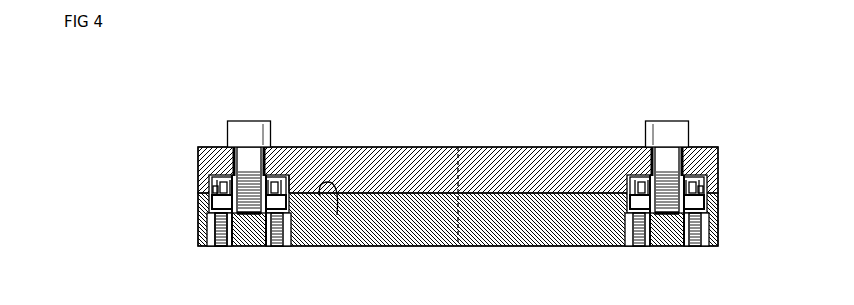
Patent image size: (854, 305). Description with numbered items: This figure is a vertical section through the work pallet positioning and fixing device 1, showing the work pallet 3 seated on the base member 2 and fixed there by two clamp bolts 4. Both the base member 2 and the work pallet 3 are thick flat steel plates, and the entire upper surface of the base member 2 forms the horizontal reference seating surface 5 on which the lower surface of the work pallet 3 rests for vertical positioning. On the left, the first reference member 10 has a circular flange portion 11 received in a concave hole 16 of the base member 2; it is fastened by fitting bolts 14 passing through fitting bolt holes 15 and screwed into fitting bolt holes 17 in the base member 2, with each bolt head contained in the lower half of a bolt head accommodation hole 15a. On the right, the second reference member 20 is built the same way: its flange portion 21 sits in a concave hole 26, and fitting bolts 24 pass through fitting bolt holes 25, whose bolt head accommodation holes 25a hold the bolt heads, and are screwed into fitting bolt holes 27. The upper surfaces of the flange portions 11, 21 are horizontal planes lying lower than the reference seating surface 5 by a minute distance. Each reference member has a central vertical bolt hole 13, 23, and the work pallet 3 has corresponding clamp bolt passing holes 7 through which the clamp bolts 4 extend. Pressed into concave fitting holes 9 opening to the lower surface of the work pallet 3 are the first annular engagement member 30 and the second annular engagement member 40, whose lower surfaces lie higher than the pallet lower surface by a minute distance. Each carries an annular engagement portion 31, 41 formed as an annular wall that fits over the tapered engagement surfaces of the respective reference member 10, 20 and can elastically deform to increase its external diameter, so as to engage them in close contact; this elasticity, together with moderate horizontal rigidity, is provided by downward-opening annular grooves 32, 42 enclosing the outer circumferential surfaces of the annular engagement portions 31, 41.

The work pallet positioning and fixing device 1 is at (511, 117).
The base member 2 is at (410, 250).
The work pallet 3 is at (369, 146).
The clamp bolt 4 is at (256, 121).
The reference seating surface 5 is at (337, 215).
The clamp bolt passing hole 7 is at (257, 158).
The concave fitting hole 9 is at (278, 178).
The first reference member 10 is at (294, 226).
The flange portion 11 is at (205, 214).
The bolt hole 13 is at (262, 232).
The fitting bolt 14 is at (216, 230).
The fitting bolt hole 15 is at (289, 212).
The bolt head accommodation hole 15a is at (293, 186).
The concave hole 16 is at (212, 203).
The fitting bolt hole 17 is at (226, 242).
The second reference member 20 is at (705, 222).
The flange portion 21 is at (711, 216).
The bolt hole 23 is at (674, 212).
The fitting bolt 24 is at (632, 240).
The fitting bolt hole 25 is at (630, 200).
The bolt head accommodation hole 25a is at (630, 193).
The concave hole 26 is at (620, 210).
The fitting bolt hole 27 is at (655, 222).
The first annular engagement member 30 is at (210, 181).
The annular engagement portion 31 is at (232, 178).
The annular groove 32 is at (212, 188).
The second annular engagement member 40 is at (708, 181).
The annular engagement portion 41 is at (676, 180).
The annular groove 42 is at (712, 190).